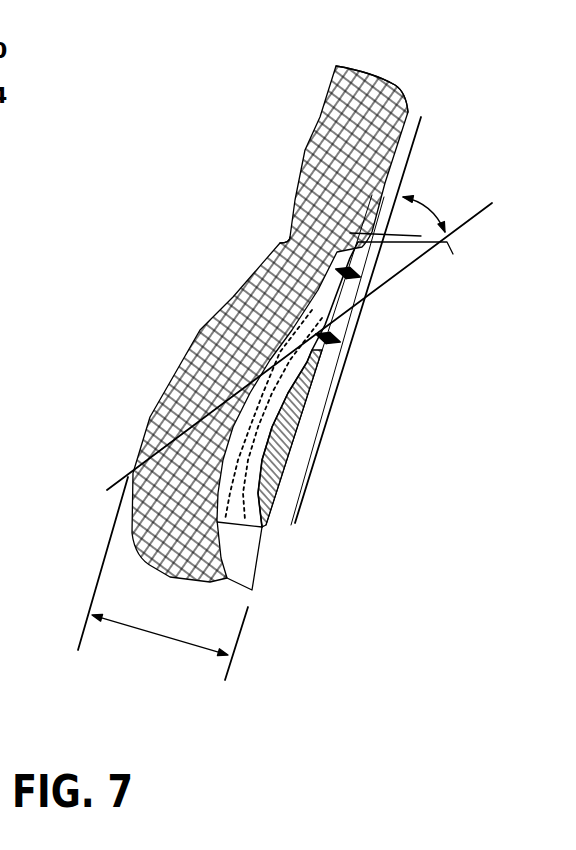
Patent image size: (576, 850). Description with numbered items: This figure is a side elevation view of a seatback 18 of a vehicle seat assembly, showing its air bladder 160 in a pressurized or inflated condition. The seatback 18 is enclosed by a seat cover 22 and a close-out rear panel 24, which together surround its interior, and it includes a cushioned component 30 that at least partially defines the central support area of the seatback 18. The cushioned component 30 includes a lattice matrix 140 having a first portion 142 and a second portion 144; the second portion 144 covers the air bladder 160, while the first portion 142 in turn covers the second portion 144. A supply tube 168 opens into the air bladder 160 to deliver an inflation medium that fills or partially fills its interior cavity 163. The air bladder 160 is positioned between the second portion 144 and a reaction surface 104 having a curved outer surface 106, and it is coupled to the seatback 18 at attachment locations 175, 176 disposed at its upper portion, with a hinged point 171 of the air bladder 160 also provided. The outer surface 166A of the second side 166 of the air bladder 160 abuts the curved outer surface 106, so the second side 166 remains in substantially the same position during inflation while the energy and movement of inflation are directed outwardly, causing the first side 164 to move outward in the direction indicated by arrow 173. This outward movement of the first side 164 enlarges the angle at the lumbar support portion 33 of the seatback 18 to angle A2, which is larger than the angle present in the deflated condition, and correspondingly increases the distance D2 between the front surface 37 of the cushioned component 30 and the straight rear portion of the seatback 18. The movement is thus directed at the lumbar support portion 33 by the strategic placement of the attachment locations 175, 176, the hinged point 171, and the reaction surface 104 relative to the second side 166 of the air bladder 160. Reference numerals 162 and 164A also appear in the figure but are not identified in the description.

The seatback 18 is at (281, 104).
The seat cover 22 is at (312, 135).
The close-out rear panel 24 is at (393, 185).
The cushioned component 30 is at (258, 228).
The lumbar support portion 33 is at (172, 309).
The front surface 37 is at (135, 460).
The reaction surface 104 is at (310, 428).
The curved outer surface 106 is at (310, 421).
The lattice matrix 140 is at (412, 100).
The first portion 142 is at (306, 162).
The second portion 144 is at (402, 137).
The air bladder 160 is at (233, 292).
The hatched insert region 162 is at (320, 397).
The interior cavity 163 is at (238, 493).
The first side 164 is at (212, 404).
The layer portion 164A is at (235, 348).
The second side 166 is at (246, 449).
The outer surface 166A is at (272, 503).
The supply tube 168 is at (422, 250).
The hinged point 171 is at (303, 357).
The arrow 173 is at (296, 437).
The attachment location 175 is at (372, 257).
The attachment location 176 is at (320, 323).
The angle A2 is at (432, 212).
The distance D2 is at (167, 636).